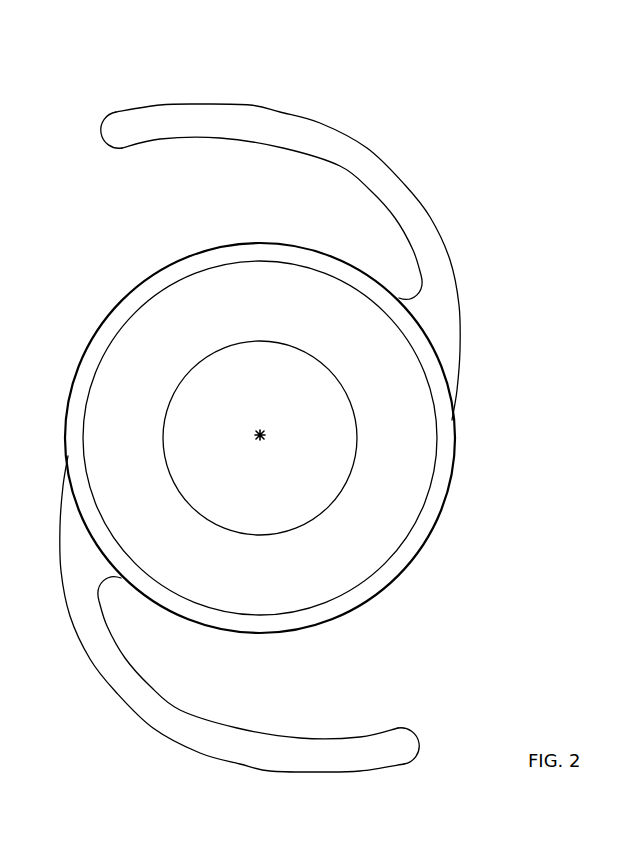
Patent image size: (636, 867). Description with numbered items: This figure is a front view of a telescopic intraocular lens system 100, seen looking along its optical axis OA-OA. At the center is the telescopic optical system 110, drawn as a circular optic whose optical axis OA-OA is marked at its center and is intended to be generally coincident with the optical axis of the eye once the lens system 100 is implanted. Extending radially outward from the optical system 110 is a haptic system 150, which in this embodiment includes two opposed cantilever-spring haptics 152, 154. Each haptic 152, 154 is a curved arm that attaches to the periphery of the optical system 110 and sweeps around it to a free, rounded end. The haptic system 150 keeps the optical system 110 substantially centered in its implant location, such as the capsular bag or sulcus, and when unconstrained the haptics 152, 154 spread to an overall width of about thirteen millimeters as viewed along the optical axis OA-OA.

The telescopic intraocular lens system 100 is at (321, 436).
The telescopic optical system 110 is at (437, 510).
The haptic system 150 is at (250, 108).
The cantilever-spring haptic 152 is at (298, 140).
The cantilever-spring haptic 154 is at (187, 727).
The optical axis OA-OA is at (264, 428).